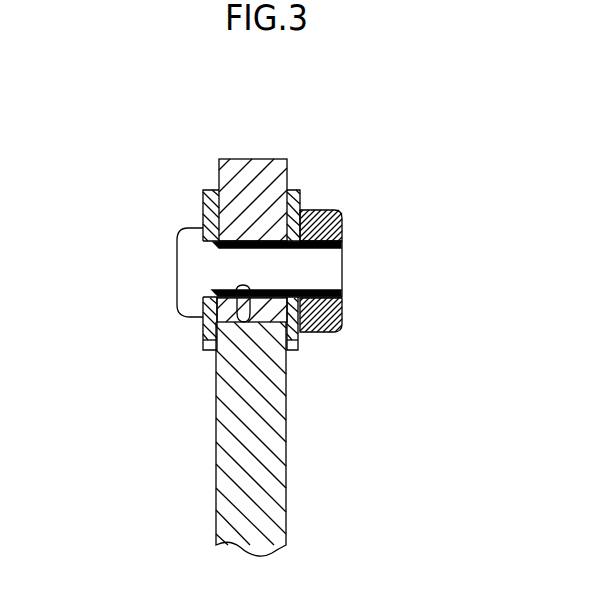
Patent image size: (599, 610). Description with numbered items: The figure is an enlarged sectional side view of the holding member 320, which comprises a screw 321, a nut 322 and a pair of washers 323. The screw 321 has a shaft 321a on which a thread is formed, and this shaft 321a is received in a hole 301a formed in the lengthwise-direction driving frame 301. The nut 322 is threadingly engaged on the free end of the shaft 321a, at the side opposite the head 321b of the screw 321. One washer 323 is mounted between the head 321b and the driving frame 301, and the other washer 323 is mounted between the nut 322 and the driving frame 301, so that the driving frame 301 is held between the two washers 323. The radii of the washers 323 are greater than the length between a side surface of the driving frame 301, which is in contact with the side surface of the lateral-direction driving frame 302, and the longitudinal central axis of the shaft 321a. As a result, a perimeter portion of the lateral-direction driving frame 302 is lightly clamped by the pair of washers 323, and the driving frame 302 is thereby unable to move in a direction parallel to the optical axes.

The lengthwise-direction driving frame 301 is at (250, 182).
The hole 301a is at (246, 315).
The lateral-direction driving frame 302 is at (272, 465).
The holding member 320 is at (364, 182).
The screw 321 is at (182, 328).
The shaft 321a is at (324, 270).
The head 321b is at (193, 247).
The nut 322 is at (340, 312).
The washers 323 is at (203, 347).